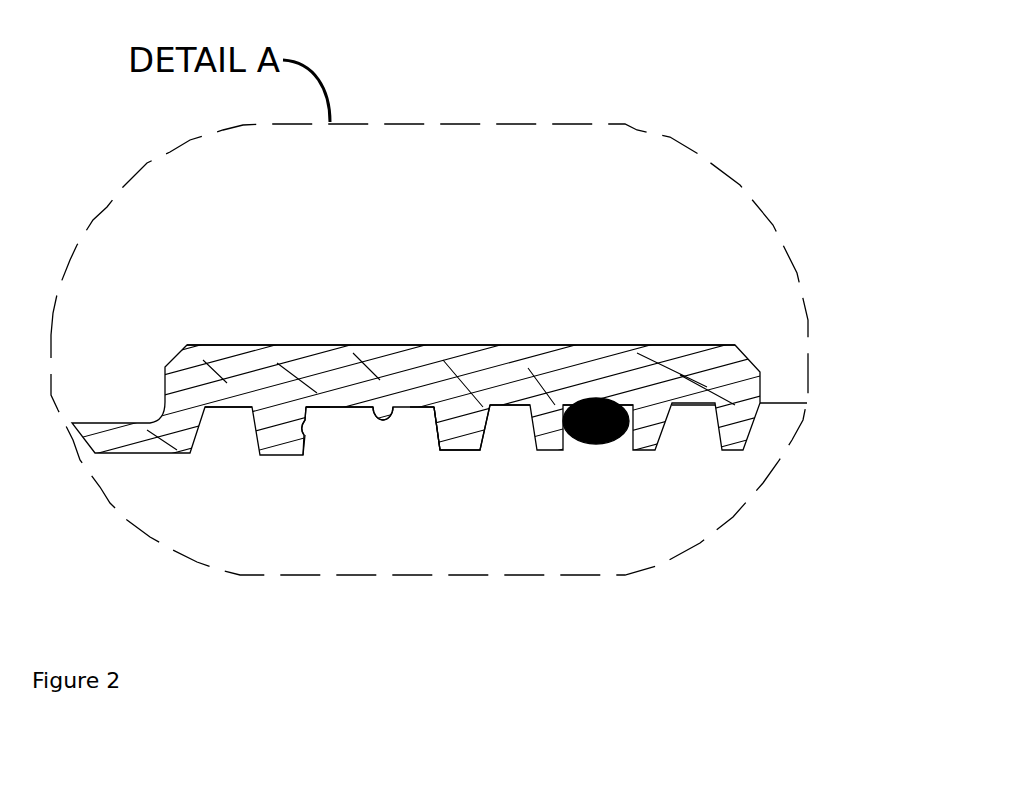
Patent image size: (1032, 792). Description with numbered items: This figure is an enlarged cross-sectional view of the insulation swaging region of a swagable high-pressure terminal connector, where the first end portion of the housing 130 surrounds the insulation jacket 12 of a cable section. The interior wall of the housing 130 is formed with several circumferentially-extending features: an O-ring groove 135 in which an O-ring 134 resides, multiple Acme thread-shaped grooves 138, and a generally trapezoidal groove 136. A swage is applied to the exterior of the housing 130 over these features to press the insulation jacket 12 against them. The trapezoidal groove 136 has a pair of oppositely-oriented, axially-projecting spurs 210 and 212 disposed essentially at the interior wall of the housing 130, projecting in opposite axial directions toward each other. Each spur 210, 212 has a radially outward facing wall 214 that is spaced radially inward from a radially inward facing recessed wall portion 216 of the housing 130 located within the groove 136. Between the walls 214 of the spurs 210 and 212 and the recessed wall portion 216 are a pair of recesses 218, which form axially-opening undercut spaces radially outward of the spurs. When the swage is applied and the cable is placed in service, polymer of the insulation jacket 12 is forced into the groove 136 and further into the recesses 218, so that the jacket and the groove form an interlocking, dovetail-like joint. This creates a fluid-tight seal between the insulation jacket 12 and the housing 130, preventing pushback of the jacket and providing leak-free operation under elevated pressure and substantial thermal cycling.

The insulation jacket 12 is at (217, 533).
The housing 130 is at (683, 345).
The O-ring 134 is at (600, 444).
The O-ring groove 135 is at (612, 365).
The trapezoidal groove 136 is at (350, 369).
The Acme thread-shaped grooves 138 is at (225, 382).
The spur 210 is at (293, 440).
The spur 212 is at (440, 440).
The radially outward facing wall 214 is at (300, 427).
The radially inward facing recessed wall portion 216 is at (395, 407).
The recesses 218 is at (305, 412).